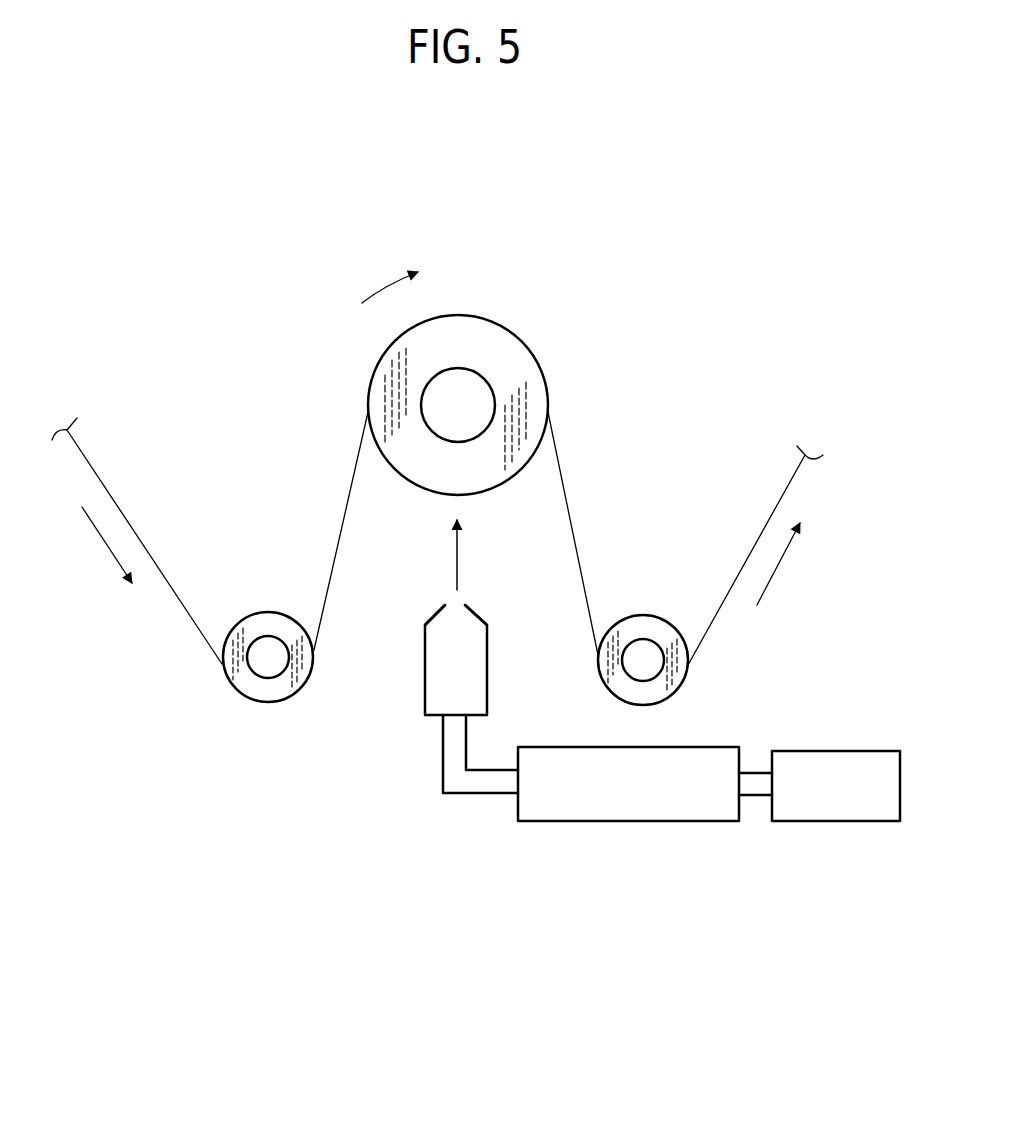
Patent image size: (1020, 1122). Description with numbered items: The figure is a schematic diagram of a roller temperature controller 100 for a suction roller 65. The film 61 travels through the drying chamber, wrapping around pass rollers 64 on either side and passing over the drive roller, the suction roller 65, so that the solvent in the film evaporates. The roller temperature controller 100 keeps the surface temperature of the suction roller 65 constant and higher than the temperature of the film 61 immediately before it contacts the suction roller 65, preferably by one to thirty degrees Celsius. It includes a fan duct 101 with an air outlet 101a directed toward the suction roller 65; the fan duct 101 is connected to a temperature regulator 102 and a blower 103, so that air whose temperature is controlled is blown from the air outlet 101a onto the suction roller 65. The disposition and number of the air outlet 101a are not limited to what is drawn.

The film 61 is at (347, 487).
The pass roller 64 is at (250, 612).
The suction roller 65 is at (483, 338).
The roller temperature controller 100 is at (601, 732).
The fan duct 101 is at (427, 672).
The air outlet 101a is at (457, 612).
The temperature regulator 102 is at (618, 825).
The blower 103 is at (830, 825).